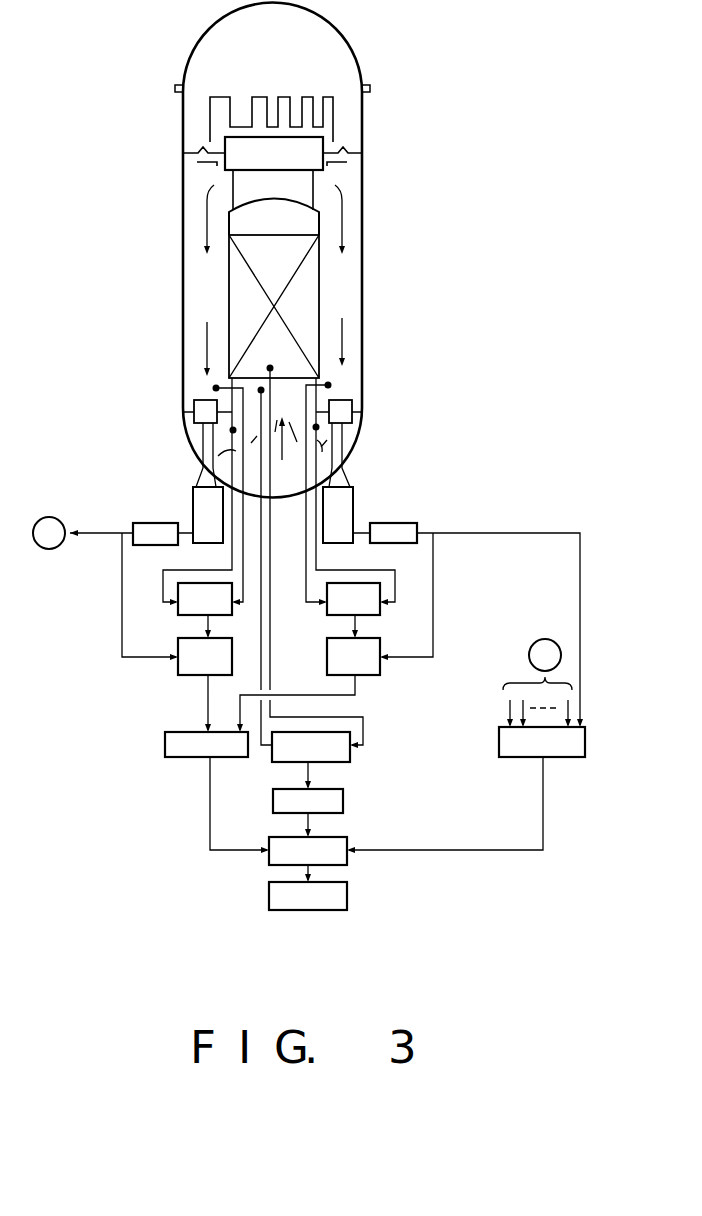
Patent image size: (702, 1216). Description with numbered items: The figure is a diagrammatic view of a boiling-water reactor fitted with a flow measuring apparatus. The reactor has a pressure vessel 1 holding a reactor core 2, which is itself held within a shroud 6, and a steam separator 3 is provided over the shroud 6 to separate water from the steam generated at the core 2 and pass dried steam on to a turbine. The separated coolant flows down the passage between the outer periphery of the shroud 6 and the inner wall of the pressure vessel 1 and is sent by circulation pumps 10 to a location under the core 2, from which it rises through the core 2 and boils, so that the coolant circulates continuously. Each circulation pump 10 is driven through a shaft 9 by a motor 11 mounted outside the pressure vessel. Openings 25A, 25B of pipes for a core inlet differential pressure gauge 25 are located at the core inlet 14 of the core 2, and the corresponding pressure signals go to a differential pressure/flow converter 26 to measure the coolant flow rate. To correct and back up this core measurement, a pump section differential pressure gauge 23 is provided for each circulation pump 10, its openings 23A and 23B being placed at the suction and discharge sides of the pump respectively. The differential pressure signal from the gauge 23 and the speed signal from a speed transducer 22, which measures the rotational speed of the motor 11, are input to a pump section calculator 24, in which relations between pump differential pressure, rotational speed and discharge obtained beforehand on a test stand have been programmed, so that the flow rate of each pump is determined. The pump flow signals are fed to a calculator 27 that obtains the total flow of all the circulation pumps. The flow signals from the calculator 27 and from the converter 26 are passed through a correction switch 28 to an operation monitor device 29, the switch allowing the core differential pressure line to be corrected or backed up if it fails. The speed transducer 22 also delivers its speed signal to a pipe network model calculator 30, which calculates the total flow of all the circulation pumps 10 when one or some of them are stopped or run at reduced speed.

The pressure vessel 1 is at (363, 188).
The reactor core 2 is at (238, 305).
The steam separator 3 is at (308, 150).
The shroud 6 is at (322, 275).
The shaft 9 is at (343, 462).
The circulation pump 10 is at (343, 405).
The motor 11 is at (203, 502).
The core inlet 14 is at (272, 539).
The speed transducer 22 is at (150, 527).
The pump section differential pressure gauge 23 is at (178, 612).
The opening 23A is at (329, 385).
The opening 23B is at (317, 427).
The pump section calculator 24 is at (178, 675).
The core inlet differential pressure gauge 25 is at (337, 763).
The opening 25A is at (268, 367).
The opening 25B is at (215, 387).
The differential pressure/flow converter 26 is at (343, 803).
The calculator 27 is at (170, 758).
The correction switch 28 is at (350, 862).
The operation monitor device 29 is at (350, 907).
The pipe network model calculator 30 is at (576, 760).